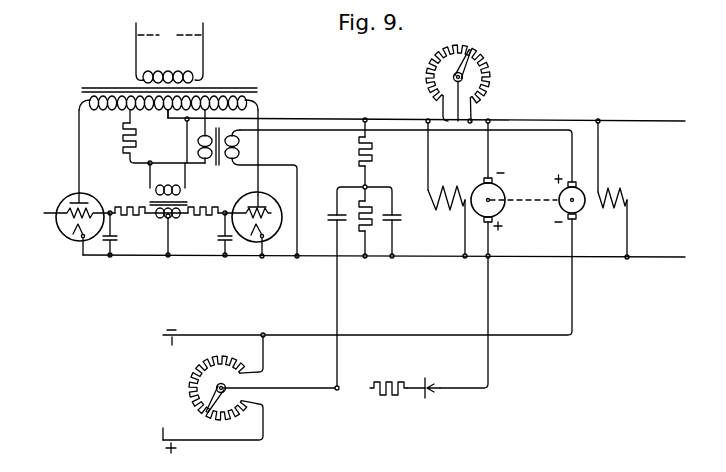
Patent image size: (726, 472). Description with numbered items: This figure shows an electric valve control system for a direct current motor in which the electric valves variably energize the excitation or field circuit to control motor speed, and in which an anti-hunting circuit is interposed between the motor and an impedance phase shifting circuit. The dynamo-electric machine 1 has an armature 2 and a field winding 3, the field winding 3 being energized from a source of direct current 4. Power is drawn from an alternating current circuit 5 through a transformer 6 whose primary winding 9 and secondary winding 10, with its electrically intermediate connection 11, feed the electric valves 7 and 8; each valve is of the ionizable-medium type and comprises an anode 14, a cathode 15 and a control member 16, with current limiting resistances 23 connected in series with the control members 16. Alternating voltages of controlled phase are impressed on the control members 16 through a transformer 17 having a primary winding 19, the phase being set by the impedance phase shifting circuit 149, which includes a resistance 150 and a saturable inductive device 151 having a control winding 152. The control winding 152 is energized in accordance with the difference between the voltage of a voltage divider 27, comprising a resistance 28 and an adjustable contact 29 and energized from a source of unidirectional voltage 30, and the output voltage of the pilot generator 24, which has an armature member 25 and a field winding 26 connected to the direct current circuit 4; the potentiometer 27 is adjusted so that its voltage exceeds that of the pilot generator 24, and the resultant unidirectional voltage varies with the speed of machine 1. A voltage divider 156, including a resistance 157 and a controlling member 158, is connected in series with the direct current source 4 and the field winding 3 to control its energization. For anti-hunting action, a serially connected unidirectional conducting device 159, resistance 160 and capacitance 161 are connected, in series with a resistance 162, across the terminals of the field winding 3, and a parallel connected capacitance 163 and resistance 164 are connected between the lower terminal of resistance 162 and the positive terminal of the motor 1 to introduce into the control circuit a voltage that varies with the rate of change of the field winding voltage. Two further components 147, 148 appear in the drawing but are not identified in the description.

The dynamo-electric machine 1 is at (465, 179).
The armature 2 is at (502, 204).
The field winding 3 is at (455, 212).
The source of direct current 4 is at (671, 271).
The alternating current circuit 5 is at (169, 51).
The transformer 6 is at (252, 90).
The electric valve 7 is at (67, 194).
The electric valve 8 is at (266, 200).
The primary winding 9 is at (175, 72).
The secondary winding 10 is at (103, 111).
The intermediate connection 11 is at (167, 109).
The anode 14 is at (86, 202).
The cathode 15 is at (72, 232).
The control member 16 is at (279, 206).
The transformer 17 is at (186, 207).
The primary winding 19 is at (165, 182).
The current limiting resistance 23 is at (135, 217).
The pilot generator 24 is at (601, 239).
The armature member 25 is at (561, 209).
The field winding 26 is at (622, 192).
The voltage divider 27 is at (238, 436).
The resistance 28 is at (207, 365).
The adjustable contact 29 is at (218, 386).
The source of unidirectional voltage 30 is at (167, 391).
The capacitor 147 is at (118, 239).
The capacitor 148 is at (220, 239).
The phase shifting circuit 149 is at (172, 160).
The resistance 150 is at (122, 142).
The saturable inductive device 151 is at (215, 156).
The control winding 152 is at (245, 147).
The voltage divider 156 is at (518, 103).
The resistance 157 is at (478, 57).
The controlling member 158 is at (453, 77).
The unidirectional conducting device 159 is at (428, 395).
The resistance 160 is at (391, 395).
The capacitance 161 is at (329, 218).
The resistance 162 is at (373, 151).
The capacitance 163 is at (401, 219).
The resistance 164 is at (361, 233).